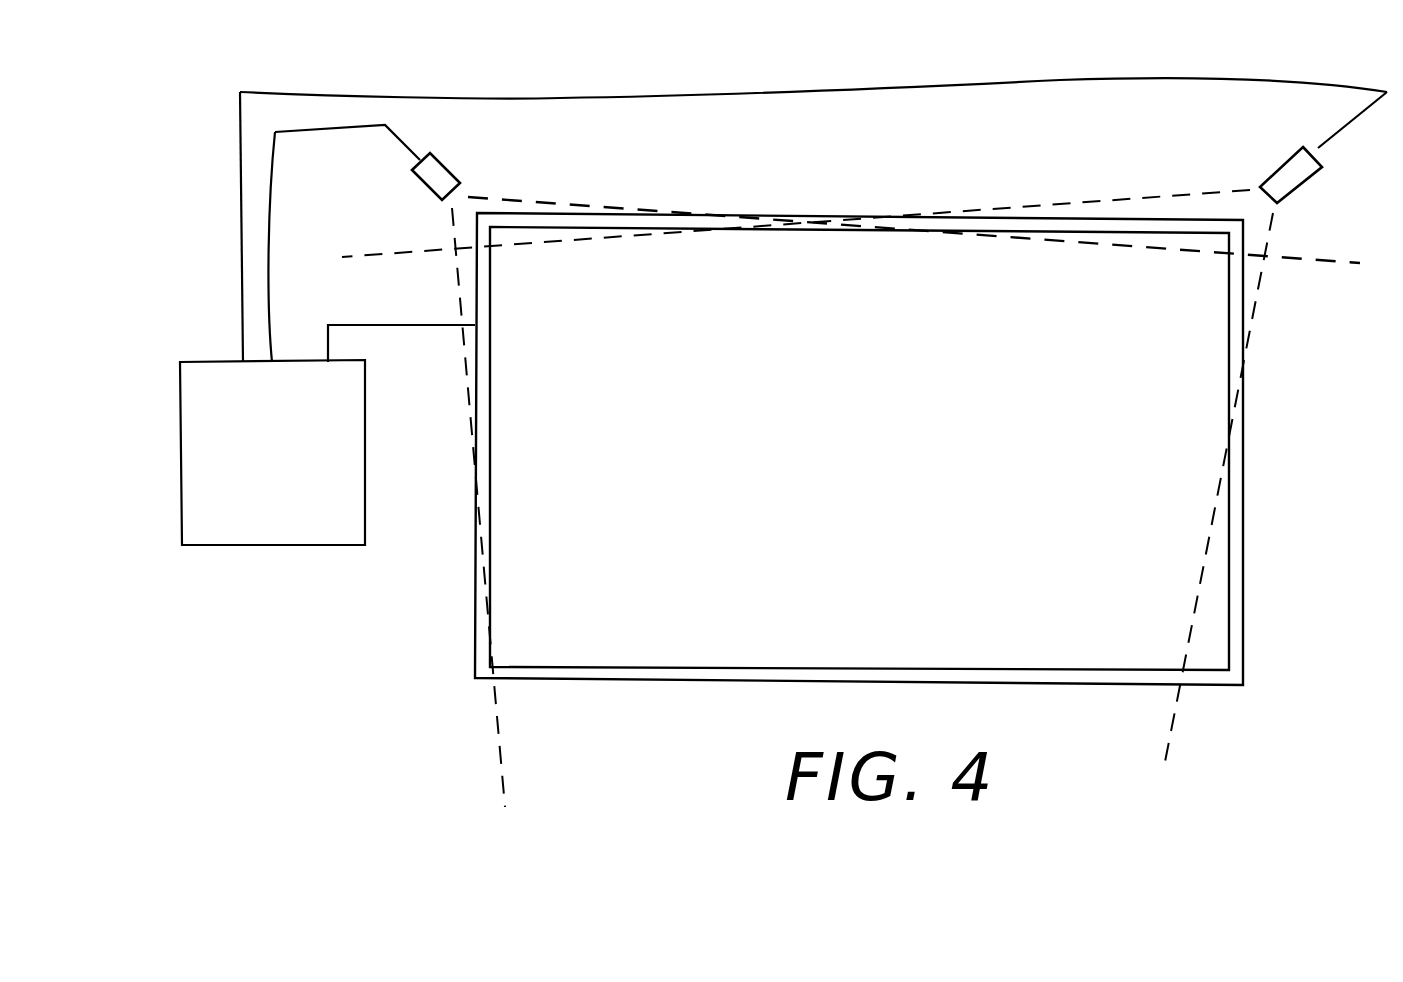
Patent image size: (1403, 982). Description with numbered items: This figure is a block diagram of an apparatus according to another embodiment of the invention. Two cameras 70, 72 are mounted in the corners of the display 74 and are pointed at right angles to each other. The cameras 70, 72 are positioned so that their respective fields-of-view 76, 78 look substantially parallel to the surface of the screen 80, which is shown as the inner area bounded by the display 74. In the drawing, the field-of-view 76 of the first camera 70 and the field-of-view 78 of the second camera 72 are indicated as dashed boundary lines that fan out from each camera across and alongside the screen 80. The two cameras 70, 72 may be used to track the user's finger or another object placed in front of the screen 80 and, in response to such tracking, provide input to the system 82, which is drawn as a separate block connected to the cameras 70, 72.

The first sensor 70 is at (437, 173).
The second sensor 72 is at (1287, 175).
The display frame 74 is at (1247, 542).
The field of view boundary lines of first sensor 76 is at (500, 733).
The field of view boundary lines of second sensor 78 is at (390, 253).
The display surface 80 is at (1183, 443).
The system 82 is at (300, 496).